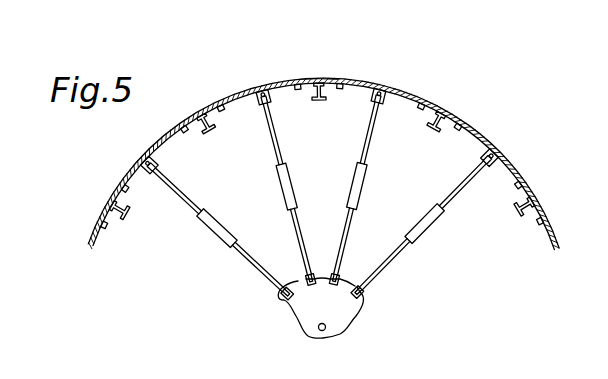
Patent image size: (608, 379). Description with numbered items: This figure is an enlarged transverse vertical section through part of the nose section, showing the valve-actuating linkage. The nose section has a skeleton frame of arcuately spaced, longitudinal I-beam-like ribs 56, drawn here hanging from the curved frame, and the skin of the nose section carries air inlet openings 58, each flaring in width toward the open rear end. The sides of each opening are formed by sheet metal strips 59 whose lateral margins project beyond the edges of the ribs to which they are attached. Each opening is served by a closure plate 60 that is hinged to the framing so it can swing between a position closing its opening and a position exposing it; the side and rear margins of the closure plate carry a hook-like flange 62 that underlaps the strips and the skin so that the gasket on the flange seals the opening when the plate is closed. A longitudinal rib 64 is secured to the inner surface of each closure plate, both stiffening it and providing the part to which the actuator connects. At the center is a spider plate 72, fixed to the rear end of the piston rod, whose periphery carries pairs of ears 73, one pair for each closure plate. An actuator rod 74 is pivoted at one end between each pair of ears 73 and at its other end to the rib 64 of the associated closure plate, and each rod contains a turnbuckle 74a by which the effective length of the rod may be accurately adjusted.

The I-beam-like ribs 56 is at (435, 126).
The air inlet openings 58 is at (337, 78).
The sheet metal strips 59 is at (198, 112).
The closure plate 60 is at (228, 93).
The hook-like flange 62 is at (336, 84).
The longitudinal rib 64 is at (258, 106).
The spider plate 72 is at (345, 318).
The ears 73 is at (358, 278).
The actuator rod 74 is at (343, 222).
The turnbuckle 74a is at (232, 228).